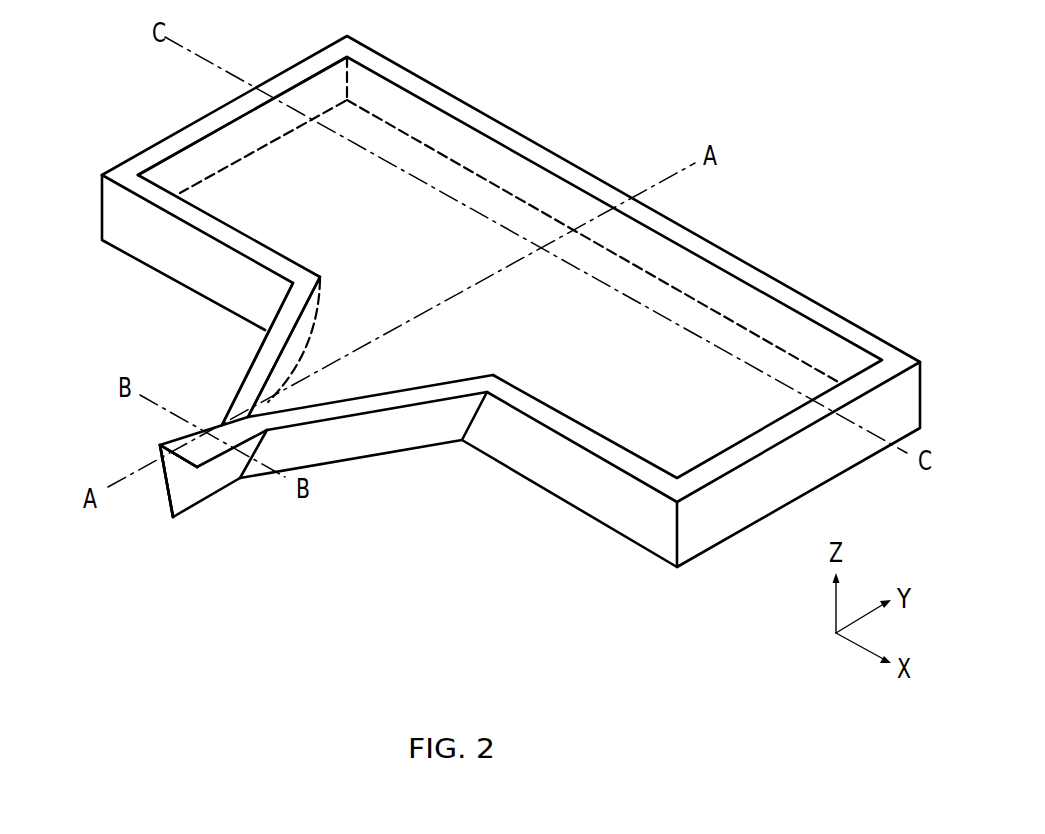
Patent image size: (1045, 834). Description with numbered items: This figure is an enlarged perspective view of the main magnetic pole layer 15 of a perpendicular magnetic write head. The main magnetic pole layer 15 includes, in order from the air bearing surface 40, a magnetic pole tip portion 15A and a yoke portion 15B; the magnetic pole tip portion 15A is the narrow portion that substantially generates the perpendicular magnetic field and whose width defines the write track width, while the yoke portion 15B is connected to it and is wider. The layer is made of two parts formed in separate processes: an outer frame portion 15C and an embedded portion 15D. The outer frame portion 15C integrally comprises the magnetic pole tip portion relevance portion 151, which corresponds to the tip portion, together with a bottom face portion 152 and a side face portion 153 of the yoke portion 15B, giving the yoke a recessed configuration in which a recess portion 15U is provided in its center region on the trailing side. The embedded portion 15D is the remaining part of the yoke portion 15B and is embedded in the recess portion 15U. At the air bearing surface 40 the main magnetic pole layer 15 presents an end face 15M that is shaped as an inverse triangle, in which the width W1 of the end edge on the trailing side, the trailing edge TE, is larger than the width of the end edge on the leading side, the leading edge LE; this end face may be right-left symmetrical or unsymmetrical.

The main magnetic pole layer 15 is at (165, 328).
The magnetic pole tip portion 15A is at (221, 470).
The yoke portion 15B is at (371, 435).
The outer frame portion 15C is at (137, 164).
The embedded portion 15D is at (213, 150).
The end face 15M is at (163, 484).
The recess portion 15U is at (572, 208).
The air bearing surface 40 is at (133, 510).
The magnetic pole tip portion relevance portion 151 is at (222, 423).
The bottom face portion 152 is at (601, 400).
The side face portion 153 is at (303, 78).
The leading edge LE is at (173, 520).
The trailing edge TE is at (193, 470).
The width of the trailing edge W1 is at (197, 467).